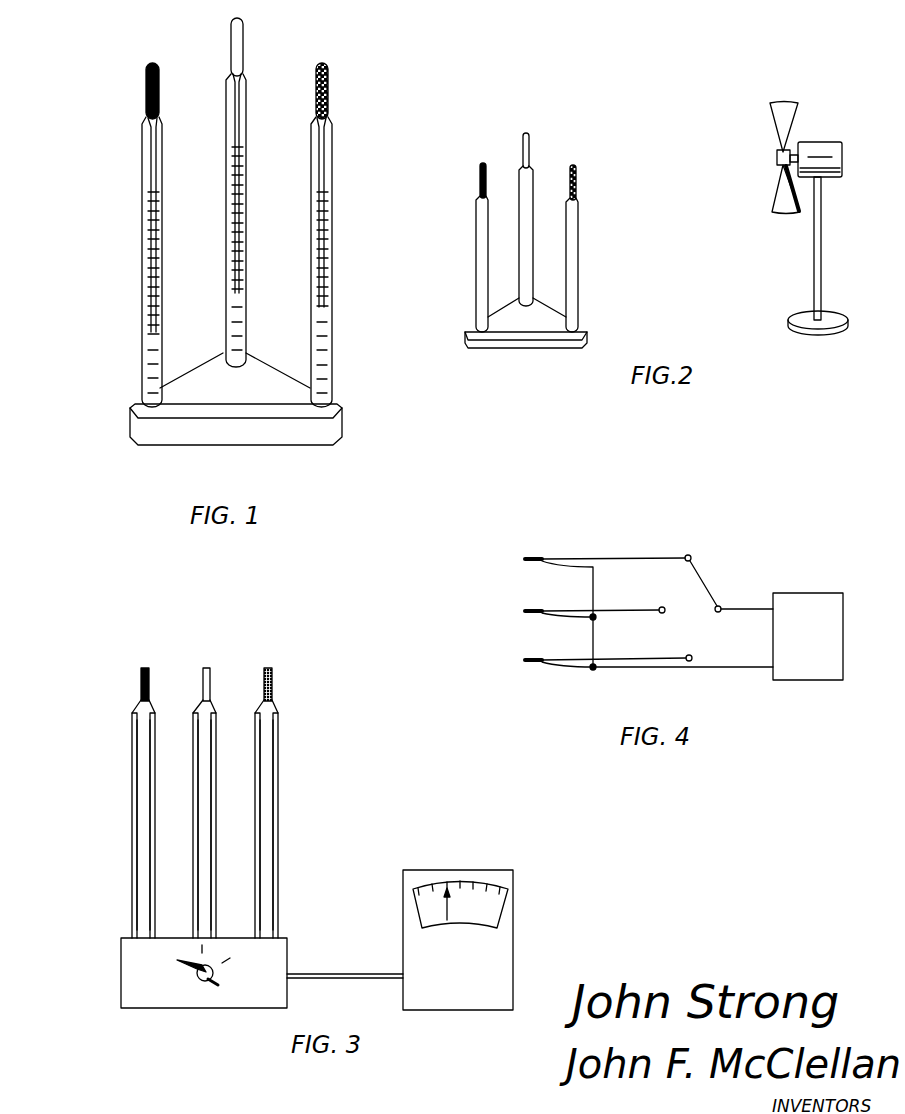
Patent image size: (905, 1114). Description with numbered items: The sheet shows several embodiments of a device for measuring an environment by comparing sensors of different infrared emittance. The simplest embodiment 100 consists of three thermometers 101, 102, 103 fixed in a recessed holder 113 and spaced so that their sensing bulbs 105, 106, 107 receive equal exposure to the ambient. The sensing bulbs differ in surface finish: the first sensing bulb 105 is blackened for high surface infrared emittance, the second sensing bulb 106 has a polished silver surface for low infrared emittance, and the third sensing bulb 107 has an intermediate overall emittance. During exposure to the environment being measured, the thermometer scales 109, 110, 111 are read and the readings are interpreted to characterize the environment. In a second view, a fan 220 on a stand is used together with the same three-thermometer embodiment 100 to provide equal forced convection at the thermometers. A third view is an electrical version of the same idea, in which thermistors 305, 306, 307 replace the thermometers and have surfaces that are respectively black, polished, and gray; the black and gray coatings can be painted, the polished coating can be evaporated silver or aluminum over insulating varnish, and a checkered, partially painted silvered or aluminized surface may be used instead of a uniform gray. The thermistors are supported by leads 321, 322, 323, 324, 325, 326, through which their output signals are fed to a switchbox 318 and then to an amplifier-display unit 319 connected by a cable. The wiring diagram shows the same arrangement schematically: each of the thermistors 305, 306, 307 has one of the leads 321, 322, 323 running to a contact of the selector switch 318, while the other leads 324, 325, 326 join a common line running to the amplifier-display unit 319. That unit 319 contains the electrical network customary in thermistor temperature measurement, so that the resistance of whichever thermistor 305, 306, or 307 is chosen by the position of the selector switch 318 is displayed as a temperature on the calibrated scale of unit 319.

In FIG. 1, the simplest embodiment 100 is at (236, 418).
In FIG. 2, the simplest embodiment 100 is at (528, 349).
In FIG. 1, the thermometer 101 is at (146, 235).
In FIG. 1, the thermometer 102 is at (262, 189).
In FIG. 1, the thermometer 103 is at (350, 235).
In FIG. 1, the sensing bulb 105 is at (147, 90).
In FIG. 1, the sensing bulb 106 is at (245, 36).
In FIG. 1, the sensing bulb 107 is at (327, 86).
In FIG. 1, the thermometer scale 109 is at (153, 236).
In FIG. 1, the thermometer scale 110 is at (233, 237).
In FIG. 1, the thermometer scale 111 is at (320, 236).
In FIG. 1, the recessed holder 113 is at (235, 380).
In FIG. 2, the fan 220 is at (822, 236).
In FIG. 4, the thermistor 305 is at (525, 559).
In FIG. 3, the thermistor 305 is at (141, 668).
In FIG. 4, the thermistor 306 is at (525, 611).
In FIG. 3, the thermistor 306 is at (204, 668).
In FIG. 4, the thermistor 307 is at (525, 660).
In FIG. 3, the thermistor 307 is at (270, 668).
In FIG. 4, the switchbox 318 is at (707, 580).
In FIG. 3, the switchbox 318 is at (204, 973).
In FIG. 4, the amplifier-display unit 319 is at (808, 636).
In FIG. 3, the amplifier-display unit 319 is at (458, 940).
In FIG. 4, the lead 321 is at (607, 557).
In FIG. 3, the lead 321 is at (132, 742).
In FIG. 4, the lead 322 is at (607, 611).
In FIG. 3, the lead 322 is at (193, 762).
In FIG. 4, the lead 323 is at (607, 659).
In FIG. 3, the lead 323 is at (262, 750).
In FIG. 4, the lead 324 is at (577, 570).
In FIG. 3, the lead 324 is at (148, 810).
In FIG. 4, the lead 325 is at (577, 620).
In FIG. 3, the lead 325 is at (215, 822).
In FIG. 4, the lead 326 is at (577, 668).
In FIG. 3, the lead 326 is at (278, 827).